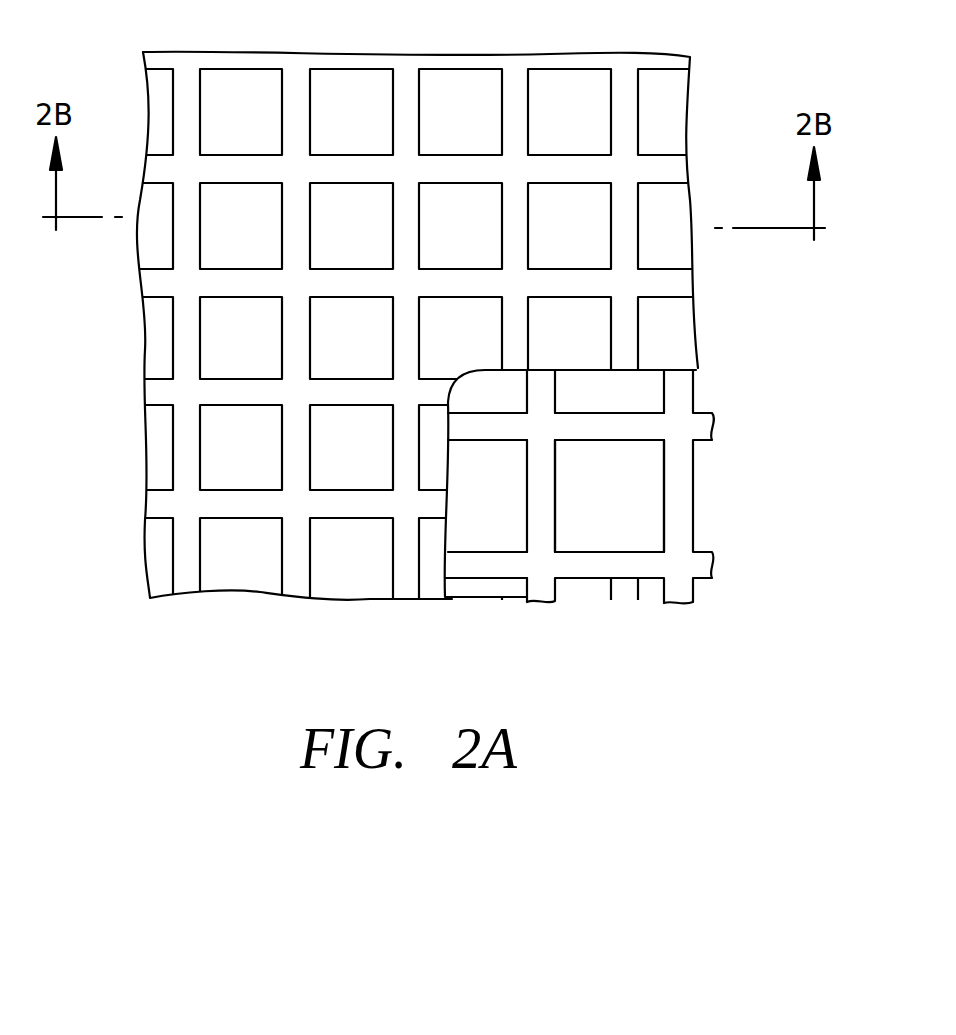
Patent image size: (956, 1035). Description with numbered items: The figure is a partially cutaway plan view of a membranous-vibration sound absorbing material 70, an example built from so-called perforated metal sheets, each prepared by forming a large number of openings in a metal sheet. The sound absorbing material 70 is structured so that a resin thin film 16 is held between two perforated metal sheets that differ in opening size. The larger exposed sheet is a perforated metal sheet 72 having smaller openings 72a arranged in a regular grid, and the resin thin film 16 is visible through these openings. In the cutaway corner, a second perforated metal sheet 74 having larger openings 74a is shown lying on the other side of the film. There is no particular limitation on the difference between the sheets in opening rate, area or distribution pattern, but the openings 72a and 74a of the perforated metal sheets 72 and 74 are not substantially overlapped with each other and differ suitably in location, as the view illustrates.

The membranous-vibration sound absorbing material 70 is at (419, 341).
The resin thin film 16 is at (662, 113).
The perforated metal sheet 72 is at (407, 374).
The smaller openings 72a is at (243, 577).
The perforated metal sheet 74 is at (617, 516).
The larger openings 74a is at (628, 493).